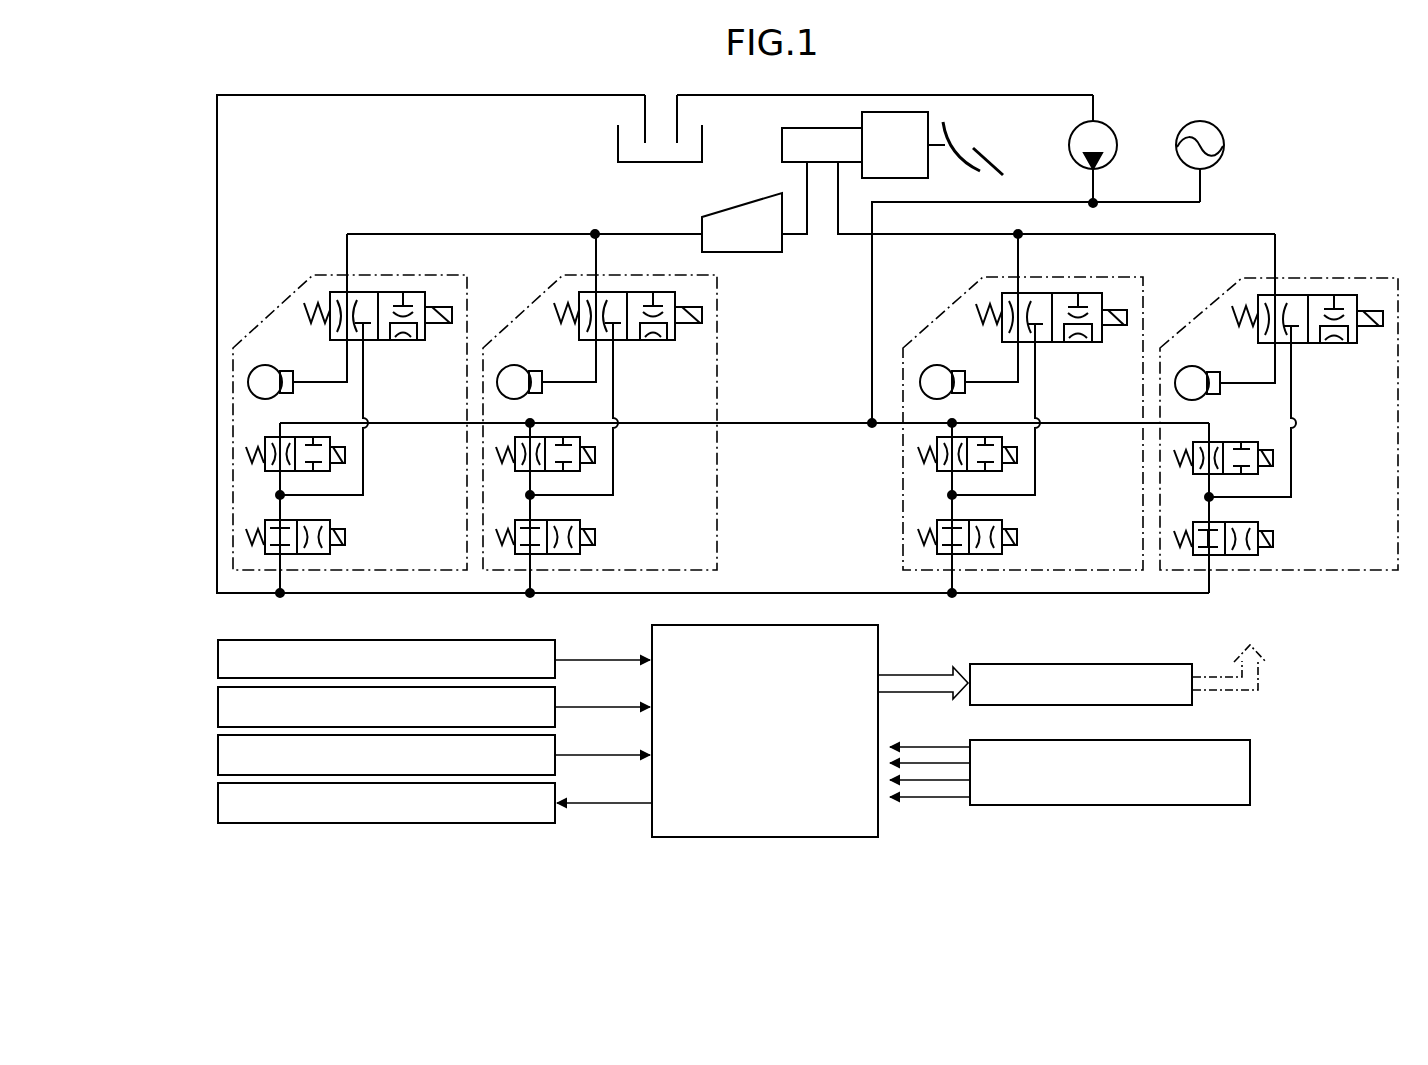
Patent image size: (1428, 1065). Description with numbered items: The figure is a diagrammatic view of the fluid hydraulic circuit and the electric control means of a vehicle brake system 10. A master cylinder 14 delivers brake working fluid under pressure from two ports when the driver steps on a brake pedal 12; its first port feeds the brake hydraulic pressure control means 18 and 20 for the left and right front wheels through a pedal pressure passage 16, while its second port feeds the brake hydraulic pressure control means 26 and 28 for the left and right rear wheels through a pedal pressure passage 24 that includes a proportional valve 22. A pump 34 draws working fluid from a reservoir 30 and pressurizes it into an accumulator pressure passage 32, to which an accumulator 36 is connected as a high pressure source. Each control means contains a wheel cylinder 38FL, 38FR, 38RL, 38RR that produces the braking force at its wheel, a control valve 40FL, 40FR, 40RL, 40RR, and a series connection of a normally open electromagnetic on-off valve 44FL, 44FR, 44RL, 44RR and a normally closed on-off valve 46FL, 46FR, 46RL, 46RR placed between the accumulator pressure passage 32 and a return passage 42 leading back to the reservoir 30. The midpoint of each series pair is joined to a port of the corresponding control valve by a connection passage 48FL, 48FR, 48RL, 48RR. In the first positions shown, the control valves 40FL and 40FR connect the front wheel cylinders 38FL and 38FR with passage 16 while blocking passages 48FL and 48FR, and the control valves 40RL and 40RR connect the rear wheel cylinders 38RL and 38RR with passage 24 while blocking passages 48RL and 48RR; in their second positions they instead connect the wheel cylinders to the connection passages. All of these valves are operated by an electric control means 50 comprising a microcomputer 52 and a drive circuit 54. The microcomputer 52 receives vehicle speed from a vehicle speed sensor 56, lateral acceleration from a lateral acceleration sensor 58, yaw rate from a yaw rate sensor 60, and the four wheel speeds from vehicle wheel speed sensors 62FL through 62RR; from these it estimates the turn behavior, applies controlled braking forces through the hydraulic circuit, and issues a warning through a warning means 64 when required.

The brake system 10 is at (203, 156).
The brake pedal 12 is at (984, 159).
The master cylinder 14 is at (796, 128).
The pedal pressure passage 16 is at (856, 238).
The brake hydraulic pressure control means 18 is at (1023, 411).
The brake hydraulic pressure control means 20 is at (1279, 411).
The proportional valve 22 is at (722, 214).
The pedal pressure passage 24 is at (422, 234).
The brake hydraulic pressure control means 26 is at (262, 317).
The brake hydraulic pressure control means 28 is at (600, 411).
The reservoir 30 is at (618, 150).
The accumulator pressure passage 32 is at (870, 351).
The pump 34 is at (1118, 151).
The accumulator 36 is at (1225, 148).
The wheel cylinder 38RL is at (268, 398).
The wheel cylinder 38RR is at (551, 393).
The wheel cylinder 38FL is at (972, 393).
The wheel cylinder 38FR is at (1228, 394).
The control valve 40RL is at (362, 292).
The control valve 40RR is at (628, 294).
The control valve 40FL is at (1058, 295).
The control valve 40FR is at (1307, 295).
The return passage 42 is at (800, 593).
The normally open type electromagnetic on-off valve 44RL is at (320, 471).
The normally open type electromagnetic on-off valve 44RR is at (592, 468).
The normally open type electromagnetic on-off valve 44FL is at (1013, 468).
The normally open type electromagnetic on-off valve 44FR is at (1270, 462).
The normally closed type on-off valve 46RL is at (323, 520).
The normally closed type on-off valve 46RR is at (588, 535).
The normally closed type on-off valve 46FL is at (1008, 535).
The normally closed type on-off valve 46FR is at (1263, 534).
The connection passage 48RL is at (363, 369).
The connection passage 48RR is at (618, 409).
The connection passage 48FL is at (1039, 409).
The connection passage 48FR is at (1297, 411).
The electric control means 50 is at (1325, 665).
The microcomputer 52 is at (782, 798).
The drive circuit 54 is at (1023, 664).
The vehicle speed sensor 56 is at (218, 660).
The lateral acceleration sensor 58 is at (218, 708).
The yaw rate sensor 60 is at (218, 756).
The vehicle wheel speed sensor 62FL is at (1250, 771).
The vehicle wheel speed sensor 62RR is at (1198, 772).
The warning means 64 is at (218, 804).